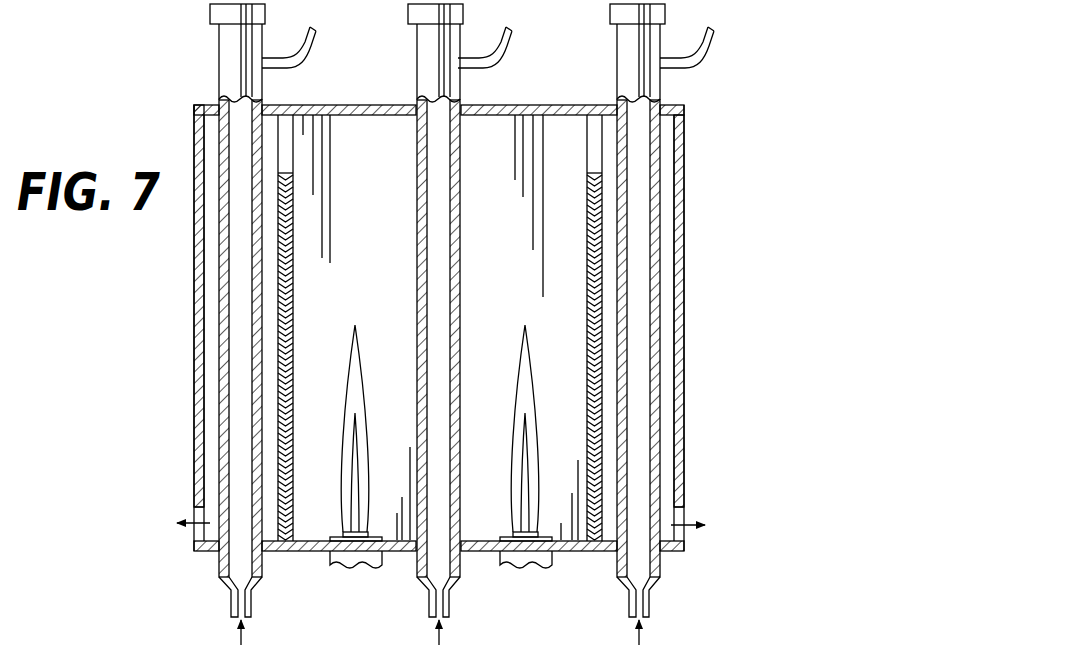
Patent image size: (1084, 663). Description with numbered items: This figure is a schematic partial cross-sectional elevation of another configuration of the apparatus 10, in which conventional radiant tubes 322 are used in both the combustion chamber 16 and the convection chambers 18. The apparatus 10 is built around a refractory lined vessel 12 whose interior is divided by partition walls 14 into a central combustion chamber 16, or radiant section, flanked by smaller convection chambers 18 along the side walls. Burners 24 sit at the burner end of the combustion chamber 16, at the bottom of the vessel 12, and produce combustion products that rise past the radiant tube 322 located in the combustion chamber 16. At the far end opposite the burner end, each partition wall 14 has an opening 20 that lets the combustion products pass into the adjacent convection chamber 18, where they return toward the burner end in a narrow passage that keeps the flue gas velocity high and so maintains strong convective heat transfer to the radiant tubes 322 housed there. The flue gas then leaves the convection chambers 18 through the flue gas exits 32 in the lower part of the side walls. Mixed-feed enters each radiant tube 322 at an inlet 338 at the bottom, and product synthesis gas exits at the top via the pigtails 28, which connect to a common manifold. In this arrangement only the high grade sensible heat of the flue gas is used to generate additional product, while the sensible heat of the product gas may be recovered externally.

The apparatus 10 is at (144, 100).
The refractory lined vessel 12 is at (685, 134).
The partition wall 14 is at (278, 430).
The combustion chamber 16 is at (569, 272).
The convection chamber 18 is at (211, 390).
The opening 20 is at (293, 148).
The burner 24 is at (358, 566).
The pigtail 28 is at (316, 40).
The flue gas exit 32 is at (195, 530).
The radiant tube 322 is at (219, 270).
The inlet 338 is at (232, 605).